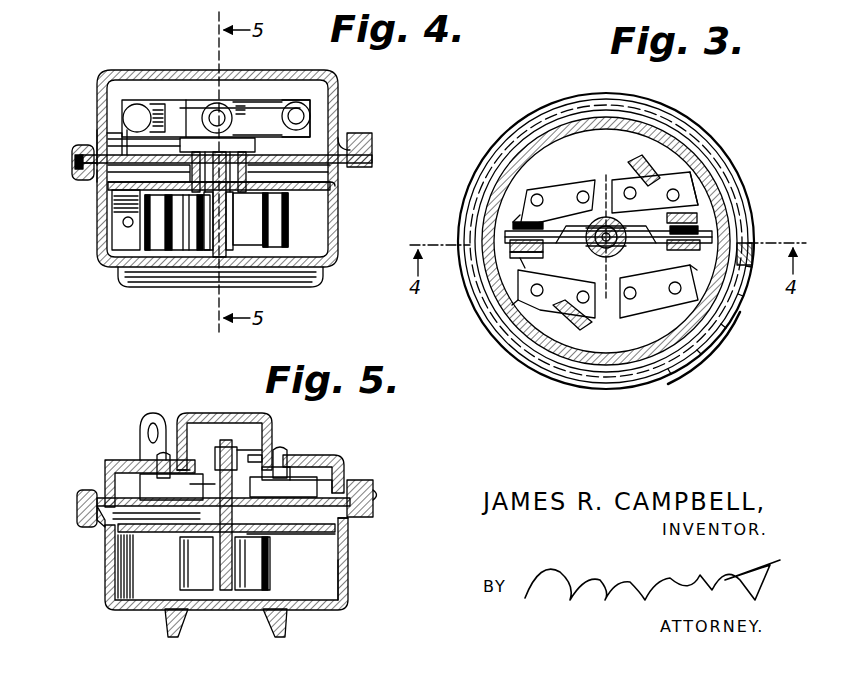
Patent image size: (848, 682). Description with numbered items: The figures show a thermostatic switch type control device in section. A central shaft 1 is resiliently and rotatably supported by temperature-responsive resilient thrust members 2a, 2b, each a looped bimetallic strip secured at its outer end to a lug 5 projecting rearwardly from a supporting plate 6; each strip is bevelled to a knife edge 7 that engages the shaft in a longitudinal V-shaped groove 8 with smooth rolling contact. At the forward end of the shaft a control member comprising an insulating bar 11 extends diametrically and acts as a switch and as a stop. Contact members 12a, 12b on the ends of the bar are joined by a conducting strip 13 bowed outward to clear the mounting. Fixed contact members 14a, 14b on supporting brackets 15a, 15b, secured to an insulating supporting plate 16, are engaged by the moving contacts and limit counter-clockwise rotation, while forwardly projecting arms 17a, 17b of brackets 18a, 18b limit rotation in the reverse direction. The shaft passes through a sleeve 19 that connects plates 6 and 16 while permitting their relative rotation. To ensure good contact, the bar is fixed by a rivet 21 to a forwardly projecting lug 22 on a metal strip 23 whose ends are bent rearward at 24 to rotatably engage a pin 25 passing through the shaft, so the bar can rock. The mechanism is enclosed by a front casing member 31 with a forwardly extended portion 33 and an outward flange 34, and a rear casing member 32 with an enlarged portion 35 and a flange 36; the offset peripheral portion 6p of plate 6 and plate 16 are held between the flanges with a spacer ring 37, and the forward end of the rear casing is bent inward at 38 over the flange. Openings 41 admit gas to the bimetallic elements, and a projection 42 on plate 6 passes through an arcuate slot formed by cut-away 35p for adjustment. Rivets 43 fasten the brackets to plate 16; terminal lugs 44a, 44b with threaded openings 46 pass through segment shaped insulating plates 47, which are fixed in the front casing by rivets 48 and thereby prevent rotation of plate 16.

In FIG. 4, the central shaft 1 is at (232, 210).
In FIG. 5, the central shaft 1 is at (213, 548).
In FIG. 4, the temperature-responsive resilient thrust member 2a is at (287, 223).
In FIG. 4, the temperature-responsive resilient thrust member 2b is at (157, 240).
In FIG. 5, the temperature-responsive resilient thrust member 2b is at (273, 576).
In FIG. 4, the lug 5 is at (118, 213).
In FIG. 4, the supporting plate 6 is at (330, 183).
In FIG. 3, the supporting plate 6 is at (700, 360).
In FIG. 5, the supporting plate 6 is at (317, 532).
In FIG. 4, the offset peripheral portion 6p is at (95, 185).
In FIG. 5, the offset peripheral portion 6p is at (368, 519).
In FIG. 4, the knife edge 7 is at (207, 232).
In FIG. 4, the V-shaped groove 8 is at (215, 258).
In FIG. 4, the bar 11 is at (253, 105).
In FIG. 3, the bar 11 is at (557, 257).
In FIG. 5, the bar 11 is at (217, 447).
In FIG. 3, the contact member 12a is at (697, 233).
In FIG. 4, the contact member 12b is at (137, 103).
In FIG. 3, the contact member 12b is at (508, 240).
In FIG. 3, the conducting strip 13 is at (612, 235).
In FIG. 5, the conducting strip 13 is at (256, 452).
In FIG. 3, the fixed contact member 14a is at (697, 223).
In FIG. 3, the fixed contact member 14b is at (520, 262).
In FIG. 4, the supporting bracket 15a is at (320, 118).
In FIG. 3, the supporting bracket 15a is at (683, 203).
In FIG. 3, the supporting bracket 15b is at (530, 317).
In FIG. 5, the supporting bracket 15b is at (183, 428).
In FIG. 4, the supporting plate 16 is at (362, 152).
In FIG. 3, the supporting plate 16 is at (665, 323).
In FIG. 5, the supporting plate 16 is at (318, 492).
In FIG. 3, the forwardly projecting arm 17a is at (700, 243).
In FIG. 4, the forwardly projecting arm 17b is at (125, 143).
In FIG. 3, the forwardly projecting arm 17b is at (510, 223).
In FIG. 5, the forwardly projecting arm 17b is at (287, 462).
In FIG. 3, the bracket 18a is at (697, 270).
In FIG. 3, the bracket 18b is at (523, 203).
In FIG. 4, the sleeve 19 is at (182, 175).
In FIG. 3, the sleeve 19 is at (603, 213).
In FIG. 5, the sleeve 19 is at (280, 532).
In FIG. 4, the rivet 21 is at (228, 104).
In FIG. 3, the rivet 21 is at (607, 262).
In FIG. 5, the rivet 21 is at (255, 447).
In FIG. 4, the lug 22 is at (193, 108).
In FIG. 5, the lug 22 is at (228, 448).
In FIG. 4, the metal strip 23 is at (216, 118).
In FIG. 3, the metal strip 23 is at (618, 253).
In FIG. 5, the metal strip 23 is at (193, 487).
In FIG. 4, the rearwardly bent ends 24 is at (181, 131).
In FIG. 4, the pin 25 is at (250, 170).
In FIG. 5, the pin 25 is at (200, 518).
In FIG. 4, the front casing member 31 is at (97, 140).
In FIG. 3, the front casing member 31 is at (600, 365).
In FIG. 4, the rear casing member 32 is at (100, 252).
In FIG. 5, the rear casing member 32 is at (348, 582).
In FIG. 4, the central forwardly extended portion 33 is at (100, 79).
In FIG. 5, the central forwardly extended portion 33 is at (207, 413).
In FIG. 4, the flange 34 is at (72, 152).
In FIG. 5, the flange 34 is at (368, 485).
In FIG. 4, the enlarged portion 35 is at (95, 170).
In FIG. 5, the enlarged portion 35 is at (373, 500).
In FIG. 4, the cut-away portion 35p is at (355, 136).
In FIG. 4, the flange 36 is at (96, 180).
In FIG. 5, the flange 36 is at (97, 525).
In FIG. 4, the spacer ring 37 is at (72, 163).
In FIG. 5, the spacer ring 37 is at (77, 503).
In FIG. 3, the inwardly bent forward end 38 is at (667, 370).
In FIG. 5, the inwardly bent forward end 38 is at (98, 478).
In FIG. 5, the opening 41 is at (172, 612).
In FIG. 3, the projection 42 is at (737, 312).
In FIG. 3, the rivet 43 is at (538, 195).
In FIG. 3, the terminal lug 44a is at (648, 147).
In FIG. 3, the terminal lug 44b is at (556, 326).
In FIG. 5, the terminal lug 44b is at (140, 430).
In FIG. 5, the threaded opening 46 is at (140, 421).
In FIG. 5, the segment shaped plate 47 is at (335, 462).
In FIG. 5, the rivet 48 is at (276, 456).